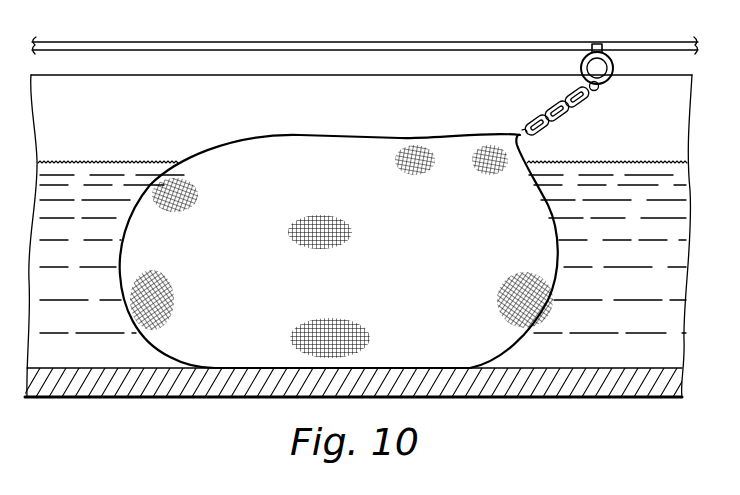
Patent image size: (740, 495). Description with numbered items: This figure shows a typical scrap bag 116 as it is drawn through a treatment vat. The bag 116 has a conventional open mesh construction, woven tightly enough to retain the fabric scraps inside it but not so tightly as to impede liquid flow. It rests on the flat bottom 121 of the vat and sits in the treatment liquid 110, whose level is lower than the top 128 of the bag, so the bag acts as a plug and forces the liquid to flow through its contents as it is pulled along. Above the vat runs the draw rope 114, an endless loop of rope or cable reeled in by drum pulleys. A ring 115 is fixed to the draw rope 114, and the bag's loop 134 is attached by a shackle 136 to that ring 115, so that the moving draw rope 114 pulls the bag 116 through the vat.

The draw rope 114 is at (290, 42).
The treatment liquid 110 is at (76, 163).
The top of the bag 128 is at (303, 135).
The scrap bag 116 is at (348, 190).
The flat bottom 121 is at (263, 346).
The ring 115 is at (608, 84).
The shackle 136 is at (572, 108).
The loop 134 is at (545, 138).